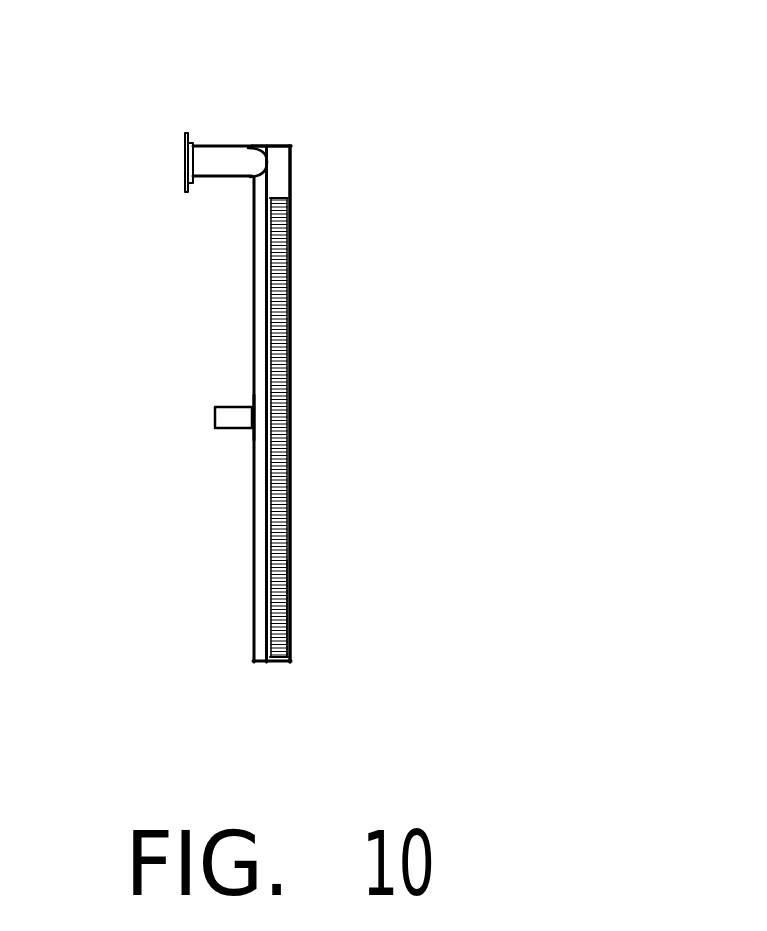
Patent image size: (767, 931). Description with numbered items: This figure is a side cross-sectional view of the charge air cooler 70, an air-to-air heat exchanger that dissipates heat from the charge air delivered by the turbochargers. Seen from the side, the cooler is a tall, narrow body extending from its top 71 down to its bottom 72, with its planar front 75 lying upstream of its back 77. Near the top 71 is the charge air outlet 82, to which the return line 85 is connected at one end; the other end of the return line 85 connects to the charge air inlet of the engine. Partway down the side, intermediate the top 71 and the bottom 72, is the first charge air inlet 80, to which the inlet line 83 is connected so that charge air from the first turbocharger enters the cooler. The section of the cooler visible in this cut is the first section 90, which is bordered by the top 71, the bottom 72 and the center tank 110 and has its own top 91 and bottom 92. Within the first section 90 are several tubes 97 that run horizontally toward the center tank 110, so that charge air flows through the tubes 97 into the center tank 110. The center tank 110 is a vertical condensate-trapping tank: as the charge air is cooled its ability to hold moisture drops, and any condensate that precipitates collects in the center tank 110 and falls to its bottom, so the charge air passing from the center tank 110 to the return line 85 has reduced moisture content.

The charge air cooler 70 is at (520, 372).
The top 71 is at (280, 137).
The bottom 72 is at (273, 663).
The front 75 is at (268, 582).
The back 77 is at (290, 587).
The first charge air inlet 80 is at (250, 405).
The charge air outlet 82 is at (265, 167).
The inlet line 83 is at (228, 430).
The return line 85 is at (217, 145).
The first section 90 is at (290, 352).
The top 91 is at (288, 218).
The bottom 92 is at (285, 663).
The tubes 97 is at (290, 545).
The center tank 110 is at (252, 263).